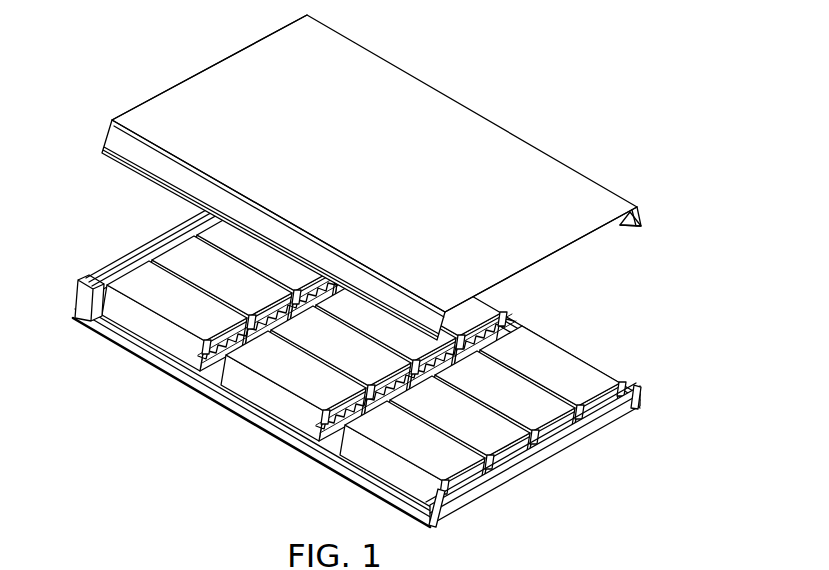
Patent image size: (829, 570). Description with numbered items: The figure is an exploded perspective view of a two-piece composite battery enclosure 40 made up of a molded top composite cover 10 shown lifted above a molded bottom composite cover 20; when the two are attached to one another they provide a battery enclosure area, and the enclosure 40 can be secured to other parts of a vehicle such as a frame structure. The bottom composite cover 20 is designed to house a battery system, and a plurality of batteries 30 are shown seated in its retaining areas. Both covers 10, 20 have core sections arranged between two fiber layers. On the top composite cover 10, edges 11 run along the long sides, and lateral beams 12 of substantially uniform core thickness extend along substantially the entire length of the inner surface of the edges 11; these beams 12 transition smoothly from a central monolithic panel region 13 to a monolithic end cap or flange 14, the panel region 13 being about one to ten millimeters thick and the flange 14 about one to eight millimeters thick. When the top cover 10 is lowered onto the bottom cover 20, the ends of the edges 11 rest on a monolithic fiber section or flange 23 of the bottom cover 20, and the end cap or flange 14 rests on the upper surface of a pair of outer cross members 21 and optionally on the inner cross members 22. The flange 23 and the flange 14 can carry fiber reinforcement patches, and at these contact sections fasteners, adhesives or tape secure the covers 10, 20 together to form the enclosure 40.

The molded top composite cover 10 is at (374, 175).
The edges 11 is at (106, 135).
The lateral beams 12 is at (632, 227).
The central monolithic panel region 13 is at (516, 147).
The monolithic end cap or flange 14 is at (213, 66).
The molded bottom composite cover 20 is at (356, 356).
The outer cross members 21 is at (97, 276).
The inner cross members 22 is at (208, 370).
The monolithic fiber section or flange 23 is at (326, 456).
The batteries 30 is at (566, 355).
The two-piece composite battery enclosure 40 is at (607, 92).